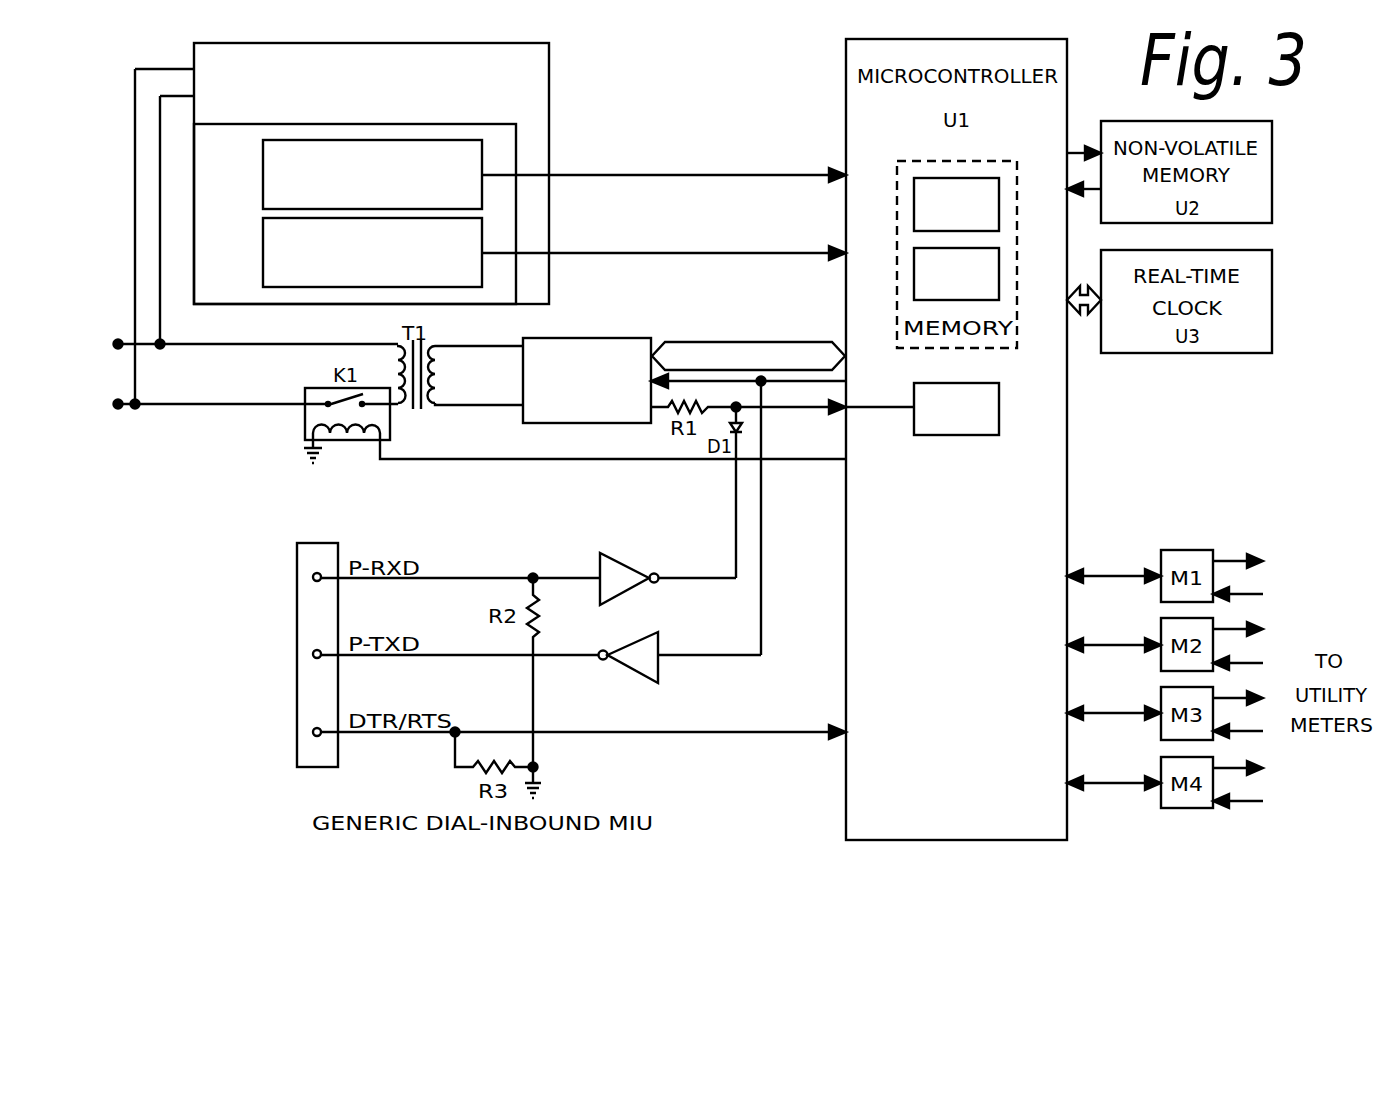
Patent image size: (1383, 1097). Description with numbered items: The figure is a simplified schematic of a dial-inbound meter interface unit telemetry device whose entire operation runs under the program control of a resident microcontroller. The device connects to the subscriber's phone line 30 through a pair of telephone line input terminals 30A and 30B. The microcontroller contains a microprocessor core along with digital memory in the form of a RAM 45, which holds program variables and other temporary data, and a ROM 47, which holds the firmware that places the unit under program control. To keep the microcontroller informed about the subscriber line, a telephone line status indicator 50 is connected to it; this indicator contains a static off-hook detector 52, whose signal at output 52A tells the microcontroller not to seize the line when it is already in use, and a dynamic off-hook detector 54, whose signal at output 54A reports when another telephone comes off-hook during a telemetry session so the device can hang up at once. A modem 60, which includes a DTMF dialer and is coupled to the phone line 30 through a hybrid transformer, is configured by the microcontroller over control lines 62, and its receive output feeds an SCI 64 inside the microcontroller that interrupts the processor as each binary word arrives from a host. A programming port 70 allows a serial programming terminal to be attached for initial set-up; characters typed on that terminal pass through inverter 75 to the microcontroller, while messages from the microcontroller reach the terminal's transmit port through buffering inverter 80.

The phone line 30 is at (112, 344).
The input terminal 30A is at (117, 342).
The input terminal 30B is at (117, 406).
The telephone line status indicator 50 is at (550, 105).
The static off-hook detector 52 is at (263, 167).
The output 52A is at (550, 175).
The dynamic off-hook detector 54 is at (263, 243).
The output 54A is at (550, 253).
The modem 60 is at (585, 338).
The control lines 62 is at (763, 342).
The SCI 64 is at (999, 407).
The RAM 45 is at (999, 202).
The ROM 47 is at (999, 270).
The programming port 70 is at (297, 572).
The inverter 75 is at (622, 558).
The buffering inverter 80 is at (628, 673).